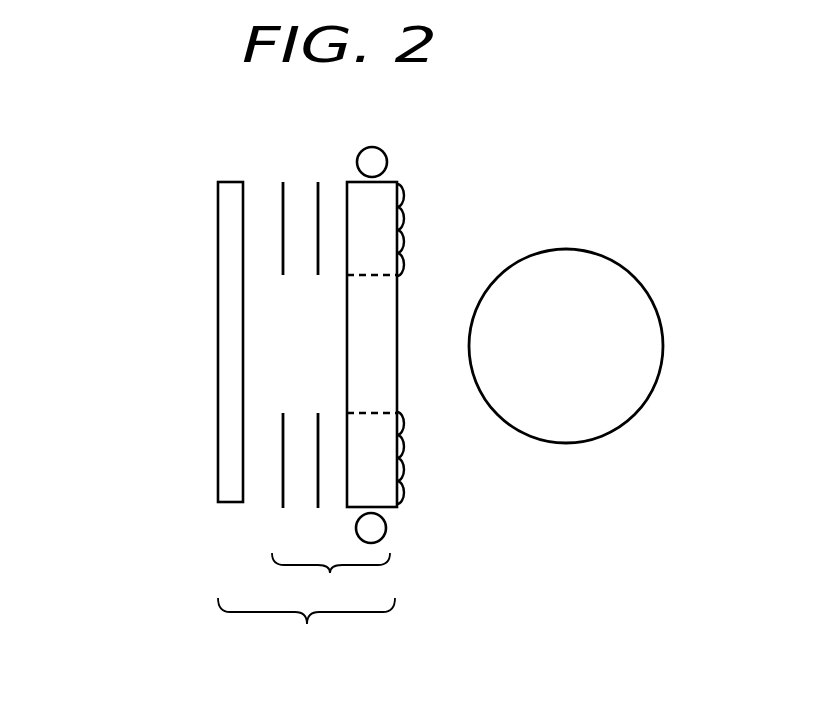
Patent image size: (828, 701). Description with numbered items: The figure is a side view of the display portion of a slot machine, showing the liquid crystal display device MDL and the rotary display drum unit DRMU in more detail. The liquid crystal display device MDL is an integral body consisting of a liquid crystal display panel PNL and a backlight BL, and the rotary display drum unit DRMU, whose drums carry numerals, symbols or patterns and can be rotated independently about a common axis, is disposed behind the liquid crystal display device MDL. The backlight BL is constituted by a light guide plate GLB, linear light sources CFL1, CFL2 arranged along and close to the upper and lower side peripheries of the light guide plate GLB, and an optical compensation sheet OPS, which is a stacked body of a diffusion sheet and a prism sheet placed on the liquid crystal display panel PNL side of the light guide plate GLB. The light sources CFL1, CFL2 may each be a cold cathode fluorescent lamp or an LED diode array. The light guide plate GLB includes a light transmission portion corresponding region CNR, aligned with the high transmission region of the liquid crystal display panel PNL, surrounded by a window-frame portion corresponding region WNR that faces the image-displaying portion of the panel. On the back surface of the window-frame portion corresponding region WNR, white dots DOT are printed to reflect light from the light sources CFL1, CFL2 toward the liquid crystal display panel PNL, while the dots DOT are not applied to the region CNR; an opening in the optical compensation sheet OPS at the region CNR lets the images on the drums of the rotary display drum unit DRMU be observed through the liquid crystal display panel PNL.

The liquid crystal display panel PNL is at (228, 182).
The optical compensation sheet OPS is at (325, 511).
The light guide plate GLB is at (352, 183).
The white dots DOT is at (401, 196).
The window-frame portion corresponding region WNR is at (371, 230).
The light transmission portion corresponding region CNR is at (380, 308).
The linear light source CFL1 is at (386, 156).
The linear light source CFL2 is at (374, 524).
The rotary display drum unit DRMU is at (610, 258).
The backlight BL is at (331, 580).
The liquid crystal display device MDL is at (306, 633).